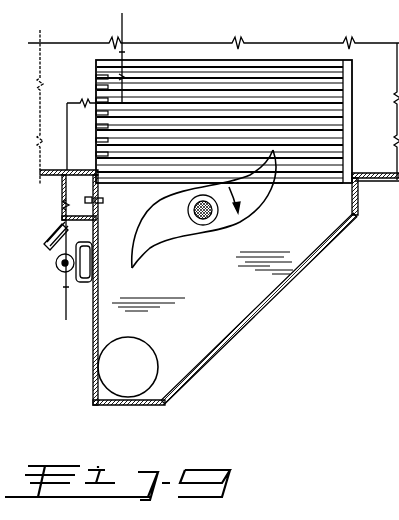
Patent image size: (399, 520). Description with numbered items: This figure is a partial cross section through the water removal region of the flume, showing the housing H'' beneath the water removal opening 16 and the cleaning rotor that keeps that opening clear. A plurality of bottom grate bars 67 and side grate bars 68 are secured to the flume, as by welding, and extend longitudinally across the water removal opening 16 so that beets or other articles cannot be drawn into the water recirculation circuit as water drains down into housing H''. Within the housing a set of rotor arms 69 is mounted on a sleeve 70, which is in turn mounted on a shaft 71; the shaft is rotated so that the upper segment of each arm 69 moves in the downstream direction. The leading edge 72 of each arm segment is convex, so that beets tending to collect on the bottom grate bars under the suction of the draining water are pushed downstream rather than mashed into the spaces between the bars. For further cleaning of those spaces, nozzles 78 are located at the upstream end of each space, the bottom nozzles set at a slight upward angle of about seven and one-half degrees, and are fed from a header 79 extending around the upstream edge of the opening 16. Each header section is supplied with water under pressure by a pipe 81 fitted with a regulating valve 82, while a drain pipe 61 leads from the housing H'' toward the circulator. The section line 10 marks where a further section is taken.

The section line 10 is at (150, 25).
The water removal opening 16 is at (113, 170).
The drain pipe 61 is at (138, 352).
The bottom grate bars 67 is at (305, 177).
The side grate bars 68 is at (337, 83).
The rotor arms 69 is at (201, 210).
The sleeve 70 is at (205, 226).
The shaft 71 is at (209, 212).
The leading edge 72 is at (143, 220).
The nozzles 78 is at (96, 88).
The header 79 is at (62, 205).
The pipe 81 is at (47, 228).
The regulating valve 82 is at (375, 209).
The housing H'' is at (259, 308).